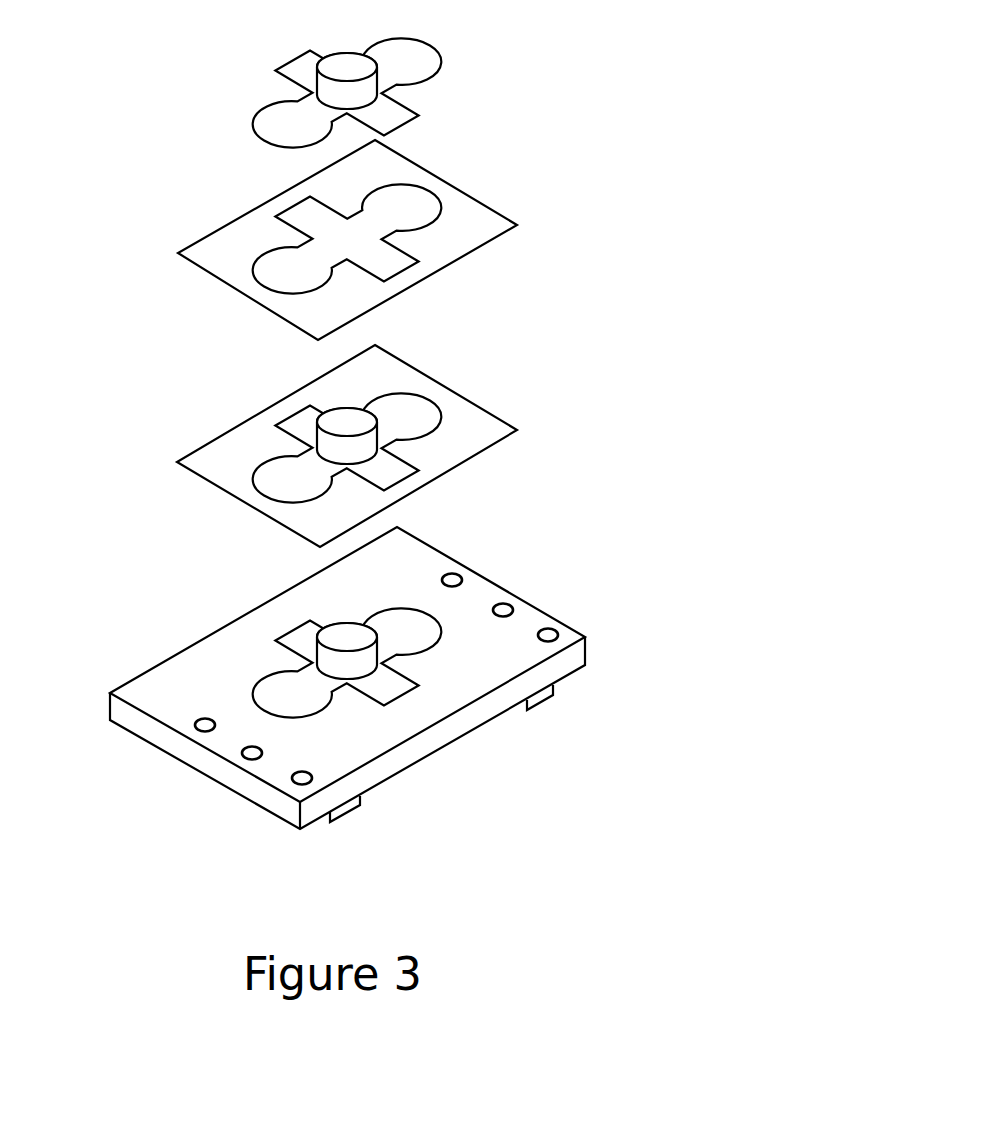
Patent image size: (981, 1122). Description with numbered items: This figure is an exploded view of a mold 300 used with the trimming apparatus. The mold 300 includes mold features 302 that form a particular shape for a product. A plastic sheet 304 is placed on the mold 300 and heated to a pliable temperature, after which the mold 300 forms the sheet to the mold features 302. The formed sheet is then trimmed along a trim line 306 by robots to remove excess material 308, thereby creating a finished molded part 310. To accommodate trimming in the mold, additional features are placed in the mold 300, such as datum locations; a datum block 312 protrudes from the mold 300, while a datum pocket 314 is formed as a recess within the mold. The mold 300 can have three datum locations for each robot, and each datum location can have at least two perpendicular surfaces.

The mold 300 is at (405, 678).
The mold features 302 is at (320, 640).
The plastic sheet 304 is at (274, 430).
The trim line 306 is at (437, 410).
The excess material 308 is at (499, 212).
The finished molded part 310 is at (430, 44).
The datum block 312 is at (562, 628).
The datum pocket 314 is at (520, 598).